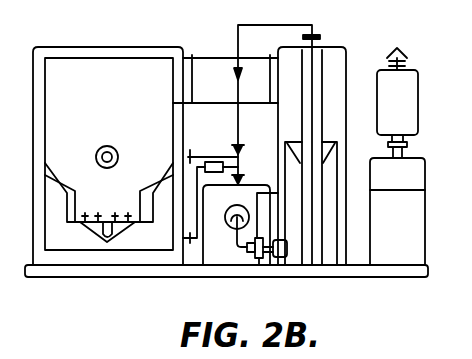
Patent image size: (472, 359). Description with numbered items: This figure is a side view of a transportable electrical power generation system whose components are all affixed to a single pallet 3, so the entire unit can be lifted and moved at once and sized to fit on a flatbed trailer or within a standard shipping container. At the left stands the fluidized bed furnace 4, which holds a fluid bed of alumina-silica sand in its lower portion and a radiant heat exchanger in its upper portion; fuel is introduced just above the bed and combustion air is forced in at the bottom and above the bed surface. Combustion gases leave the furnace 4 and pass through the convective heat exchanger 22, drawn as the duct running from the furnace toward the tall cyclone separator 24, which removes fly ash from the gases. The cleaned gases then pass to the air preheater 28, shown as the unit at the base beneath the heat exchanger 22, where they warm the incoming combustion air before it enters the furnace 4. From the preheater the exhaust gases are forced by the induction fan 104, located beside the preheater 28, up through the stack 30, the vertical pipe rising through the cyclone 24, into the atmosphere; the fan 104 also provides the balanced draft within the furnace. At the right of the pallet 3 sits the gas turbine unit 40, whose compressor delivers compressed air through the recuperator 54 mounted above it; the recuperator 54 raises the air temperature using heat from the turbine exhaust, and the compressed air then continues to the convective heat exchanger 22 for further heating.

The pallet 3 is at (428, 273).
The fluidized bed furnace 4 is at (71, 92).
The convective heat exchanger 22 is at (225, 50).
The cyclone separator 24 is at (336, 72).
The air preheater 28 is at (203, 265).
The stack 30 is at (312, 52).
The gas turbine unit 40 is at (407, 228).
The heat exchanger (recuperator) 54 is at (407, 104).
The induction fan (blower) 104 is at (259, 270).